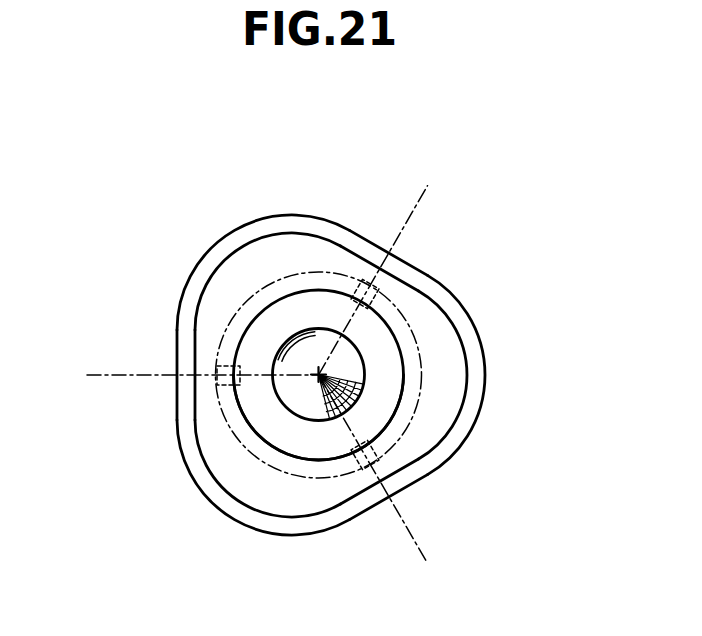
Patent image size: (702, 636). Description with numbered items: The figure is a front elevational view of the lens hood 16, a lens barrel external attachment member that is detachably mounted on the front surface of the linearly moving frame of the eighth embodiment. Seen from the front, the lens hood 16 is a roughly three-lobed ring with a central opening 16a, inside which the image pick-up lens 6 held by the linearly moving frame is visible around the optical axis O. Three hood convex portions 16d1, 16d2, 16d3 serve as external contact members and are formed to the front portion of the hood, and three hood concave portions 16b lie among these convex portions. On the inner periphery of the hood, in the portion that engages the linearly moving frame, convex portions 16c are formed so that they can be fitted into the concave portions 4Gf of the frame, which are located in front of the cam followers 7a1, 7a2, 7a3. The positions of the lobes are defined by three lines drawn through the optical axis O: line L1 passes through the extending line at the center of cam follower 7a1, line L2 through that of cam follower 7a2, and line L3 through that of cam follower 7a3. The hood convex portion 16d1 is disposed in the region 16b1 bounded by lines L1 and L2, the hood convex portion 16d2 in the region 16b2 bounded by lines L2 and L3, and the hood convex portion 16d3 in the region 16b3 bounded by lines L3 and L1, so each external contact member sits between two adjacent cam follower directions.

The lens hood 16 is at (260, 526).
The central opening 16a is at (318, 463).
The hood concave portions 16b is at (187, 372).
The region 16b1 is at (288, 258).
The region 16b2 is at (437, 403).
The region 16b3 is at (290, 500).
The convex portions 16c is at (238, 352).
The hood convex portion 16d1 is at (238, 237).
The hood convex portion 16d2 is at (478, 376).
The hood convex portion 16d3 is at (233, 510).
The concave portions 4Gf is at (222, 340).
The image pick-up lens 6 is at (295, 388).
The cam follower 7a1 is at (222, 385).
The cam follower 7a2 is at (380, 297).
The cam follower 7a3 is at (373, 450).
The optical axis O is at (318, 374).
The line L1 is at (130, 376).
The line L2 is at (404, 228).
The line L3 is at (407, 535).